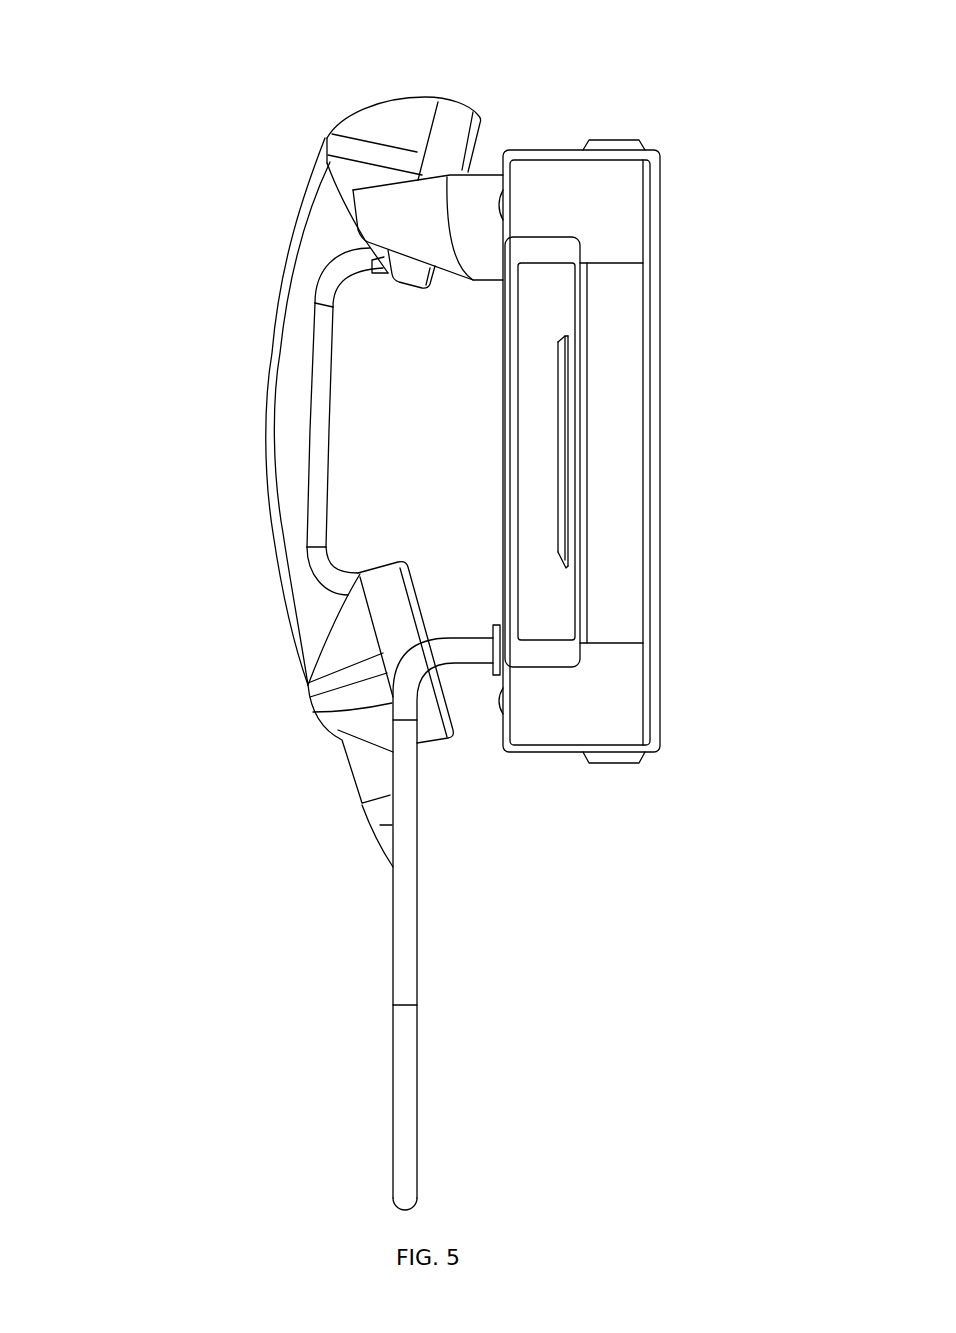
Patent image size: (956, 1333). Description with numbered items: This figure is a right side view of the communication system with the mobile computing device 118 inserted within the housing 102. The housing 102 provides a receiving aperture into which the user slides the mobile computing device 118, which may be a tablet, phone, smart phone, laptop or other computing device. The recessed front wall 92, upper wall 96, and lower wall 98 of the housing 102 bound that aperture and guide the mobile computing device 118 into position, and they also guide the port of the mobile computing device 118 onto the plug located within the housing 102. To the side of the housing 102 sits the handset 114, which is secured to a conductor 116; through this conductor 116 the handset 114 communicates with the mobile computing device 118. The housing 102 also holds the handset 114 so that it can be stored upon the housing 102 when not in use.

The recessed front wall 92 is at (590, 454).
The upper wall 96 is at (533, 235).
The lower wall 98 is at (542, 667).
The housing 102 is at (620, 202).
The handset 114 is at (296, 358).
The conductor 116 is at (490, 632).
The mobile computing device 118 is at (542, 308).